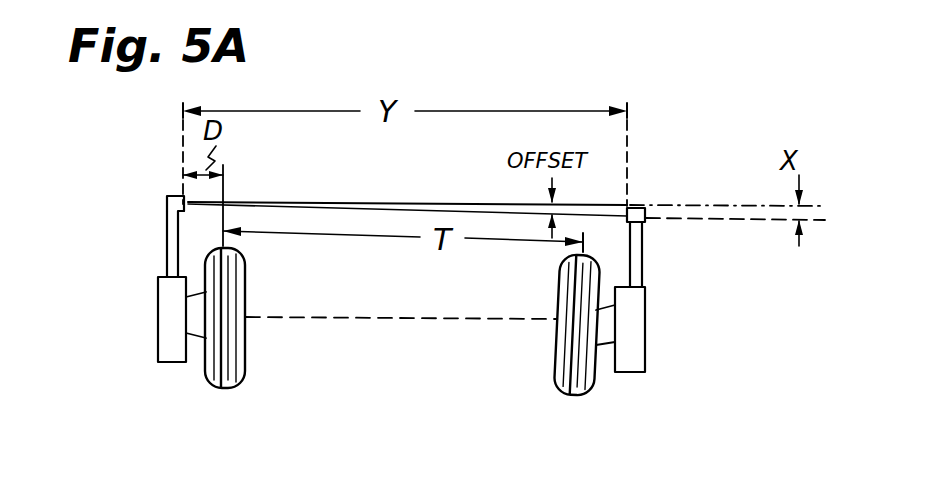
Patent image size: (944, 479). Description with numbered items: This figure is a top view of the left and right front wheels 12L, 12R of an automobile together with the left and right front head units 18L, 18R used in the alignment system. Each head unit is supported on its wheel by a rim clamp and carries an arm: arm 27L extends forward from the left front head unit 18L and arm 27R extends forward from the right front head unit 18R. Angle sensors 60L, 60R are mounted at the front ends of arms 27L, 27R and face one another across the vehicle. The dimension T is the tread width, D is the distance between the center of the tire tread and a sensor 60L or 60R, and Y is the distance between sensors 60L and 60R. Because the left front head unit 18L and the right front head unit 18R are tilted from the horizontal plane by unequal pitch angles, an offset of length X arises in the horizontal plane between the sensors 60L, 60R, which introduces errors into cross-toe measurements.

The left front wheel 12L is at (225, 388).
The right front wheel 12R is at (557, 397).
The left front head unit 18L is at (157, 320).
The right front head unit 18R is at (650, 315).
The arm of left front head unit 27L is at (167, 238).
The arm of right front head unit 27R is at (641, 262).
The left front angle sensor 60L is at (166, 214).
The right front angle sensor 60R is at (645, 218).